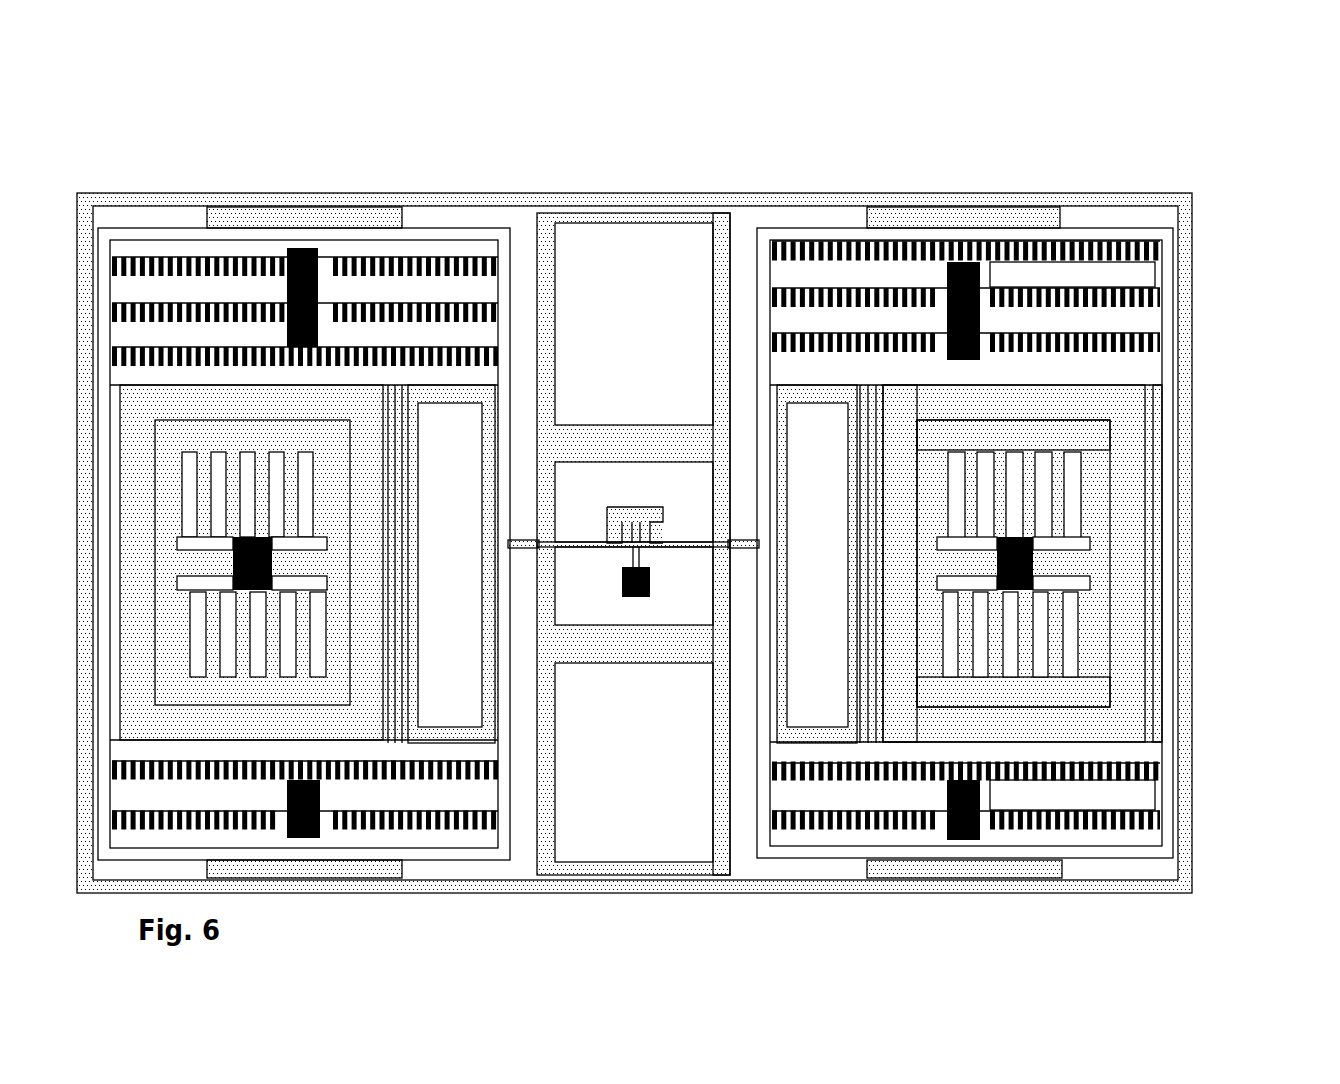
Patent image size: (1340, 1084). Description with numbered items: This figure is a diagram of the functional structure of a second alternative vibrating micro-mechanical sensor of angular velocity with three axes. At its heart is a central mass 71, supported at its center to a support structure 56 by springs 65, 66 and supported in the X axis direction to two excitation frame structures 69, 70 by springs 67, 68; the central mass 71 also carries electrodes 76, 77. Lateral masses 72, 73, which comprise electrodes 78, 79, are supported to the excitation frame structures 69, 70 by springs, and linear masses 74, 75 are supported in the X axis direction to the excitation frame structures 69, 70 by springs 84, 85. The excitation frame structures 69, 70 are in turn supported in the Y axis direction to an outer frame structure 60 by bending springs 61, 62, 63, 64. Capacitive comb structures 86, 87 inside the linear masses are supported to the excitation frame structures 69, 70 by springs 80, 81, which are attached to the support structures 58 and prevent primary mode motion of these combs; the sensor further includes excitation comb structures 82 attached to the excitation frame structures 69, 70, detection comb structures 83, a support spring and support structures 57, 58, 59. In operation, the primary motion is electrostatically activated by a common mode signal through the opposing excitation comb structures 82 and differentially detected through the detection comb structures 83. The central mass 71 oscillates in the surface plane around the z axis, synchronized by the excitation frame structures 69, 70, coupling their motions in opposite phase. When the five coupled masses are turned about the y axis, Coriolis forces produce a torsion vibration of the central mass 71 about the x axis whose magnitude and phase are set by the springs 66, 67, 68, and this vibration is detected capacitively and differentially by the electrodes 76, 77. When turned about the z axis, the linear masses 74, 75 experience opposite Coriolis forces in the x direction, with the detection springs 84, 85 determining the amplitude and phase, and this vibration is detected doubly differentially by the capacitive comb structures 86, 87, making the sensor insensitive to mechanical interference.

The support structure 56 is at (733, 335).
The support structure 57 is at (980, 317).
The support structure 58 is at (1030, 543).
The support structure 59 is at (980, 817).
The frame structure 60 is at (128, 193).
The bending spring 61 is at (245, 209).
The bending spring 62 is at (303, 873).
The bending spring 63 is at (1047, 217).
The bending spring 64 is at (1062, 867).
The spring 65 is at (640, 545).
The spring 66 is at (588, 542).
The spring 67 is at (526, 542).
The spring 68 is at (743, 545).
The excitation frame structure 69 is at (173, 227).
The excitation frame structure 70 is at (1133, 227).
The central mass 71 is at (568, 213).
The lateral mass 72 is at (421, 385).
The lateral mass 73 is at (822, 387).
The linear mass 74 is at (272, 385).
The linear mass 75 is at (927, 387).
The electrode 76 is at (667, 223).
The electrode 77 is at (715, 738).
The electrode 78 is at (450, 403).
The electrode 79 is at (838, 403).
The spring 80 is at (883, 430).
The spring 81 is at (1047, 693).
The excitation comb structure 82 is at (1040, 275).
The detection comb structure 83 is at (1100, 800).
The spring 84 is at (913, 422).
The spring 85 is at (1153, 720).
The capacitive comb structure 86 is at (1010, 490).
The capacitive comb structure 87 is at (1030, 607).